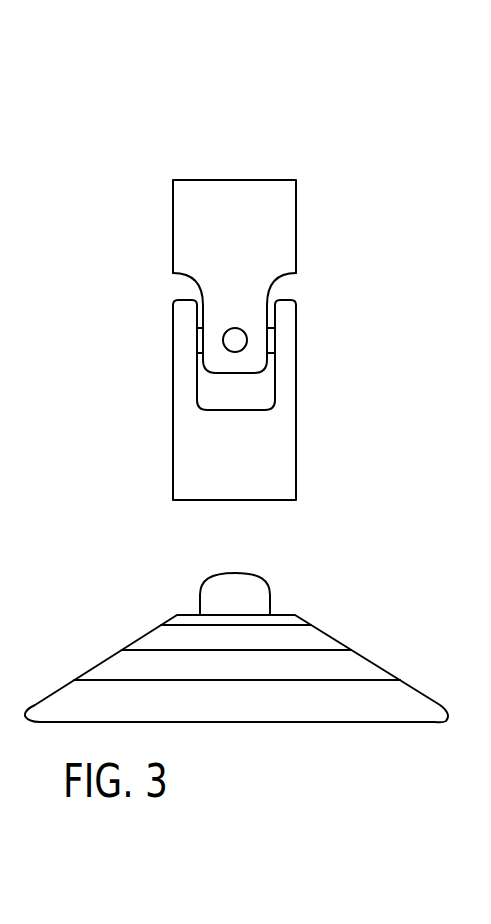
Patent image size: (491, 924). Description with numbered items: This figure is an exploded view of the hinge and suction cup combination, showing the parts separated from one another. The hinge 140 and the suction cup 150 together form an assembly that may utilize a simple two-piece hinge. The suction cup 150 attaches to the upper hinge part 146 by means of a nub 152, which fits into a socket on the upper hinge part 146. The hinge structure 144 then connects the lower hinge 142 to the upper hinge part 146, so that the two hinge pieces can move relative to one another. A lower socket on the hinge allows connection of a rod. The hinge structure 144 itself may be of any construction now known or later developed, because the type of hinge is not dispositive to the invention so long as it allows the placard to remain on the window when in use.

The hinge 140 is at (237, 163).
The lower hinge 142 is at (197, 265).
The hinge structure 144 is at (200, 340).
The upper hinge part 146 is at (183, 475).
The suction cup 150 is at (227, 675).
The nub 152 is at (247, 593).